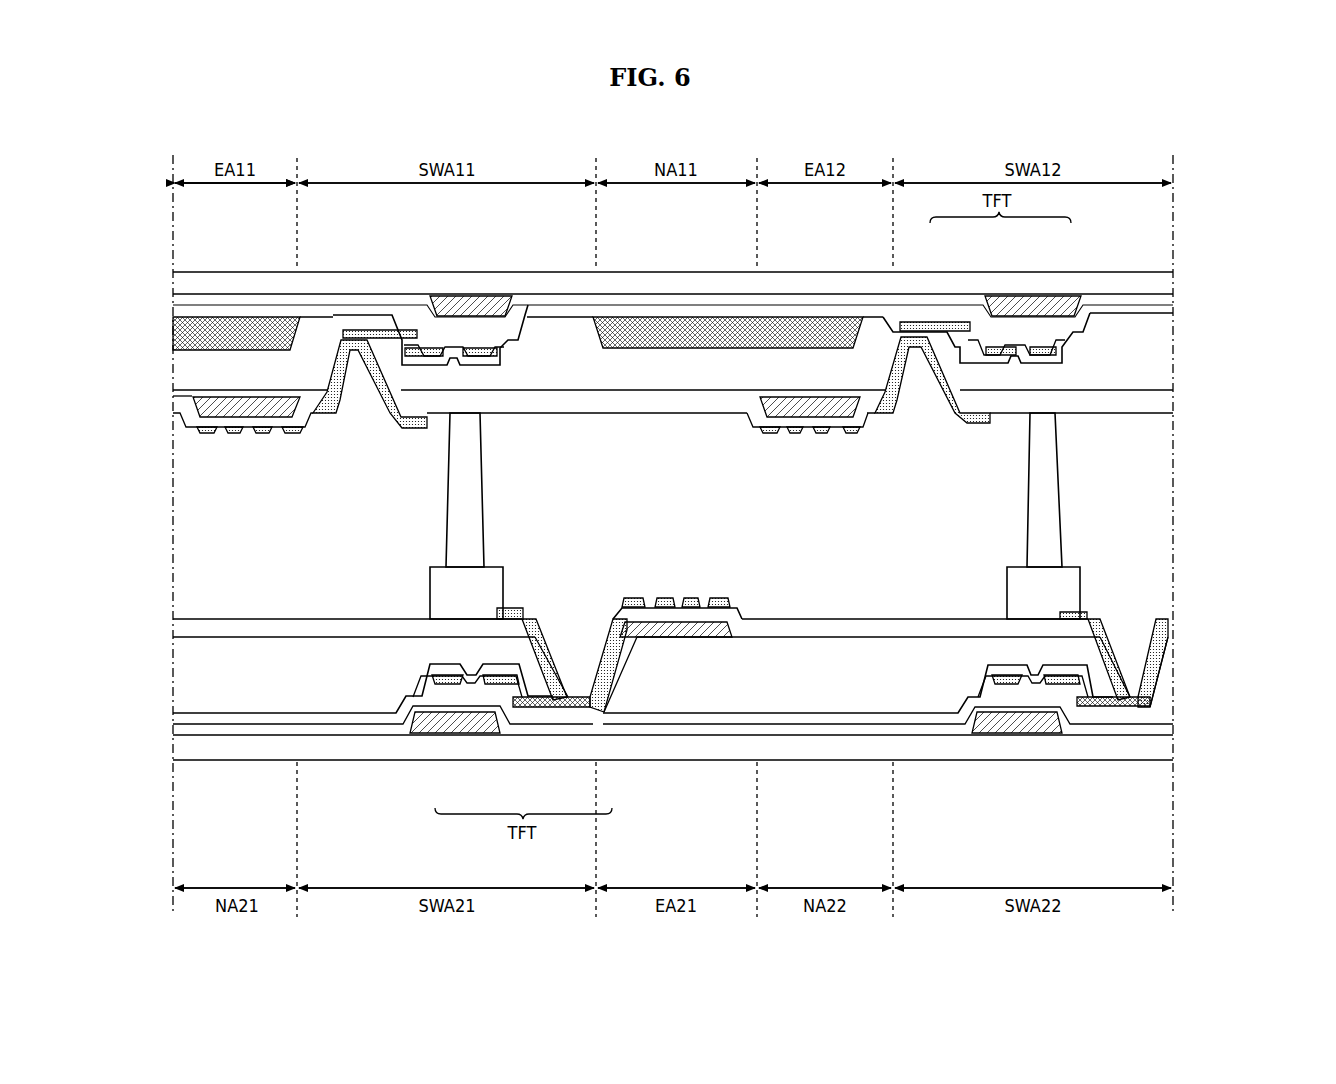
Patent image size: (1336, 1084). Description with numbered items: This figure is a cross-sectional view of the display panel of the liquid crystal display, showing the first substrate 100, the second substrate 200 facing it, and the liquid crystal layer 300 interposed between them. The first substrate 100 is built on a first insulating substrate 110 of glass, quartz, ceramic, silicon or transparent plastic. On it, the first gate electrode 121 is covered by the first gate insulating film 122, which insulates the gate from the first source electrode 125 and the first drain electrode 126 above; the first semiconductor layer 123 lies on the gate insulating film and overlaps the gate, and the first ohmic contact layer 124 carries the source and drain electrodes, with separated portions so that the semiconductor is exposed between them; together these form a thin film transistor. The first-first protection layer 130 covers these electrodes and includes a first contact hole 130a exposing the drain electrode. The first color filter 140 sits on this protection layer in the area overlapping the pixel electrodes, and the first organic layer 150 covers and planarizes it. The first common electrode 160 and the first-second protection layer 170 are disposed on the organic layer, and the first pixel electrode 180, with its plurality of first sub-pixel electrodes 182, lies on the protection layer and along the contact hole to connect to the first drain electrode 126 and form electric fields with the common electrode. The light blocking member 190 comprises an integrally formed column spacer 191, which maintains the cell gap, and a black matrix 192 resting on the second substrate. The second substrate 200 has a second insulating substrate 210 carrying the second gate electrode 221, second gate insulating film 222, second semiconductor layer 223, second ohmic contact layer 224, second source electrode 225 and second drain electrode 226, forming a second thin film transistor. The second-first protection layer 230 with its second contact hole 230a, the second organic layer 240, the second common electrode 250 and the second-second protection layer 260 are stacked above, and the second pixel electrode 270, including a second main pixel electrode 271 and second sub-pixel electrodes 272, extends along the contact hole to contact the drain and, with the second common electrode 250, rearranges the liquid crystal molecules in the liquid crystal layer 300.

The first substrate 100 is at (1213, 295).
The first insulating substrate 110 is at (1165, 291).
The first gate electrode 121 is at (1037, 305).
The first gate insulating film 122 is at (853, 303).
The first semiconductor layer 123 is at (986, 338).
The first ohmic contact layer 124 is at (958, 320).
The first source electrode 125 is at (1048, 342).
The first drain electrode 126 is at (932, 323).
The first-first protection layer 130 is at (1100, 312).
The first contact hole 130a is at (908, 402).
The first color filter 140 is at (650, 325).
The first organic layer 150 is at (1137, 328).
The first common electrode 160 is at (793, 400).
The first-second protection layer 170 is at (1165, 401).
The first pixel electrode 180 is at (520, 455).
The first sub-pixel electrodes 182 is at (857, 466).
The light blocking member 190 is at (755, 516).
The column spacer 191 is at (479, 510).
The black matrix 192 is at (755, 591).
The second substrate 200 is at (1213, 624).
The second insulating substrate 210 is at (182, 747).
The second gate electrode 221 is at (462, 726).
The second gate insulating film 222 is at (497, 712).
The second semiconductor layer 223 is at (528, 706).
The second ohmic contact layer 224 is at (560, 701).
The second source electrode 225 is at (440, 688).
The second drain electrode 226 is at (591, 703).
The second-first protection layer 230 is at (182, 718).
The second contact hole 230a is at (571, 619).
The second organic layer 240 is at (182, 680).
The second common electrode 250 is at (667, 633).
The second-second protection layer 260 is at (182, 627).
The second pixel electrode 270 is at (676, 550).
The second main pixel electrode 271 is at (650, 597).
The second sub-pixel electrodes 272 is at (672, 597).
The liquid crystal layer 300 is at (1213, 413).